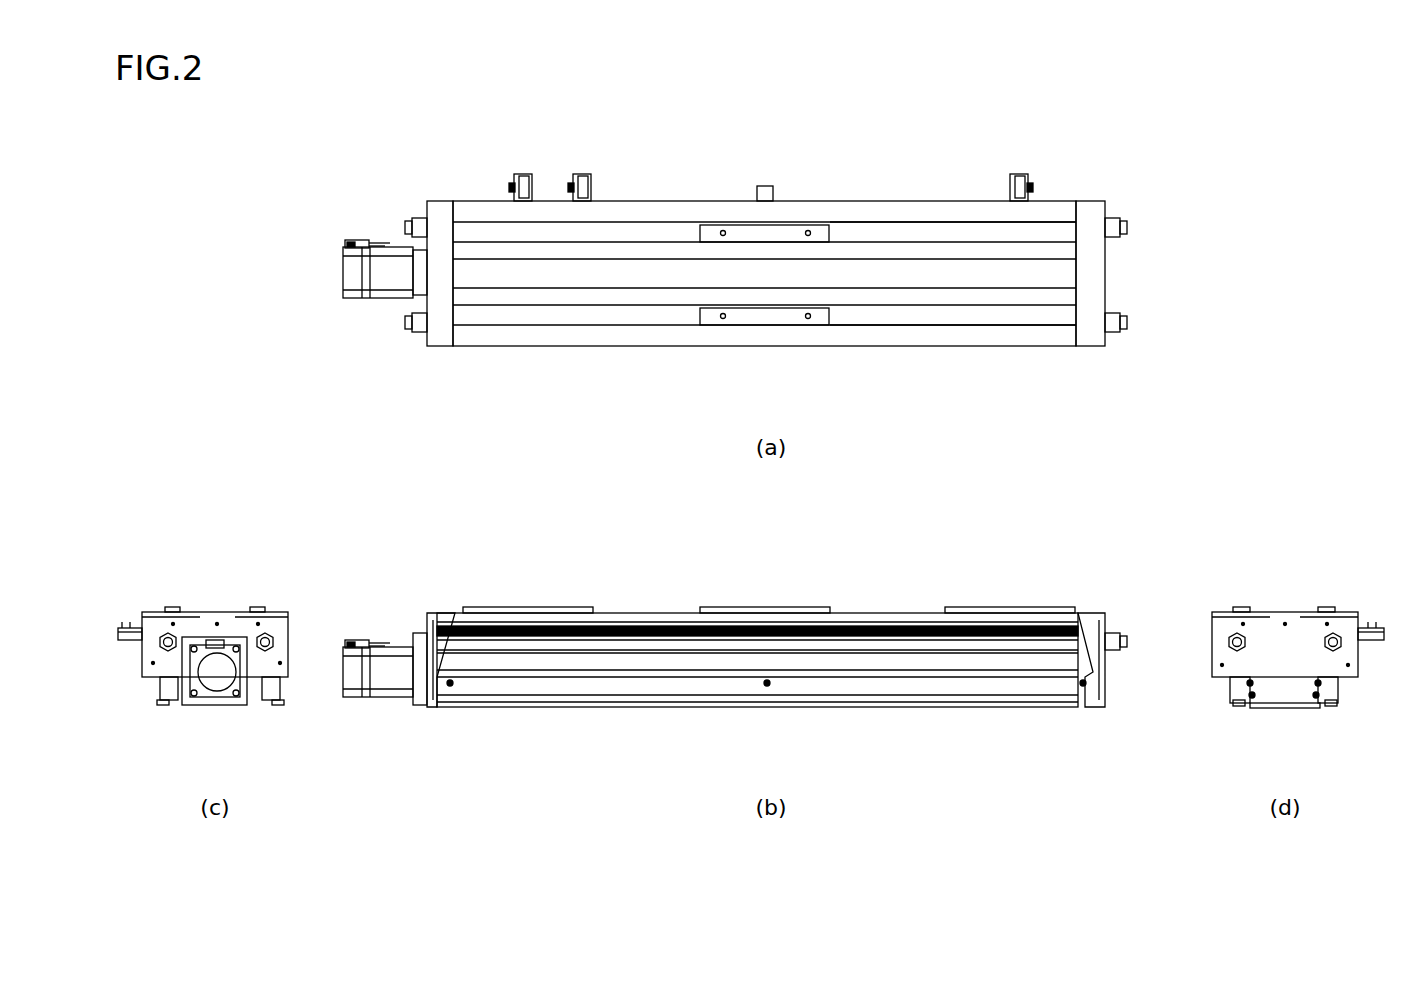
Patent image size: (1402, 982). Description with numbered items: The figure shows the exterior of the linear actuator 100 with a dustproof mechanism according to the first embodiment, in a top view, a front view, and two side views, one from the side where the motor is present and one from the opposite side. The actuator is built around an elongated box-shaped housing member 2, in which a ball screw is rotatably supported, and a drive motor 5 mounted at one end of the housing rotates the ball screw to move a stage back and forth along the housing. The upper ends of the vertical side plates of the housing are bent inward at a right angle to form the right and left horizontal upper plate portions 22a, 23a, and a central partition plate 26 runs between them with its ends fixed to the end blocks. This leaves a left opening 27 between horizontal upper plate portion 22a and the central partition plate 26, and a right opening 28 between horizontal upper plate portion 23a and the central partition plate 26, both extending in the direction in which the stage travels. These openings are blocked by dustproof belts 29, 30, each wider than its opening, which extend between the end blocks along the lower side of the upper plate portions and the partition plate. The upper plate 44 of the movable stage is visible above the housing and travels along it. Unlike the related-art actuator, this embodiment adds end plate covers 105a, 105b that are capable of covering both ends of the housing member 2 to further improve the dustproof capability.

The linear actuator 100 is at (1100, 117).
The housing member 2 is at (645, 201).
The drive motor 5 is at (358, 300).
The central partition plate 26 is at (558, 252).
The left opening 27 is at (487, 232).
The right opening 28 is at (554, 318).
The dustproof belt 29 is at (903, 232).
The dustproof belt 30 is at (912, 318).
The horizontal upper plate portion 22a is at (1053, 216).
The horizontal upper plate portion 23a is at (1016, 330).
The upper plate 44 is at (760, 318).
The end plate cover 105a is at (1101, 276).
The end plate cover 105b is at (445, 328).